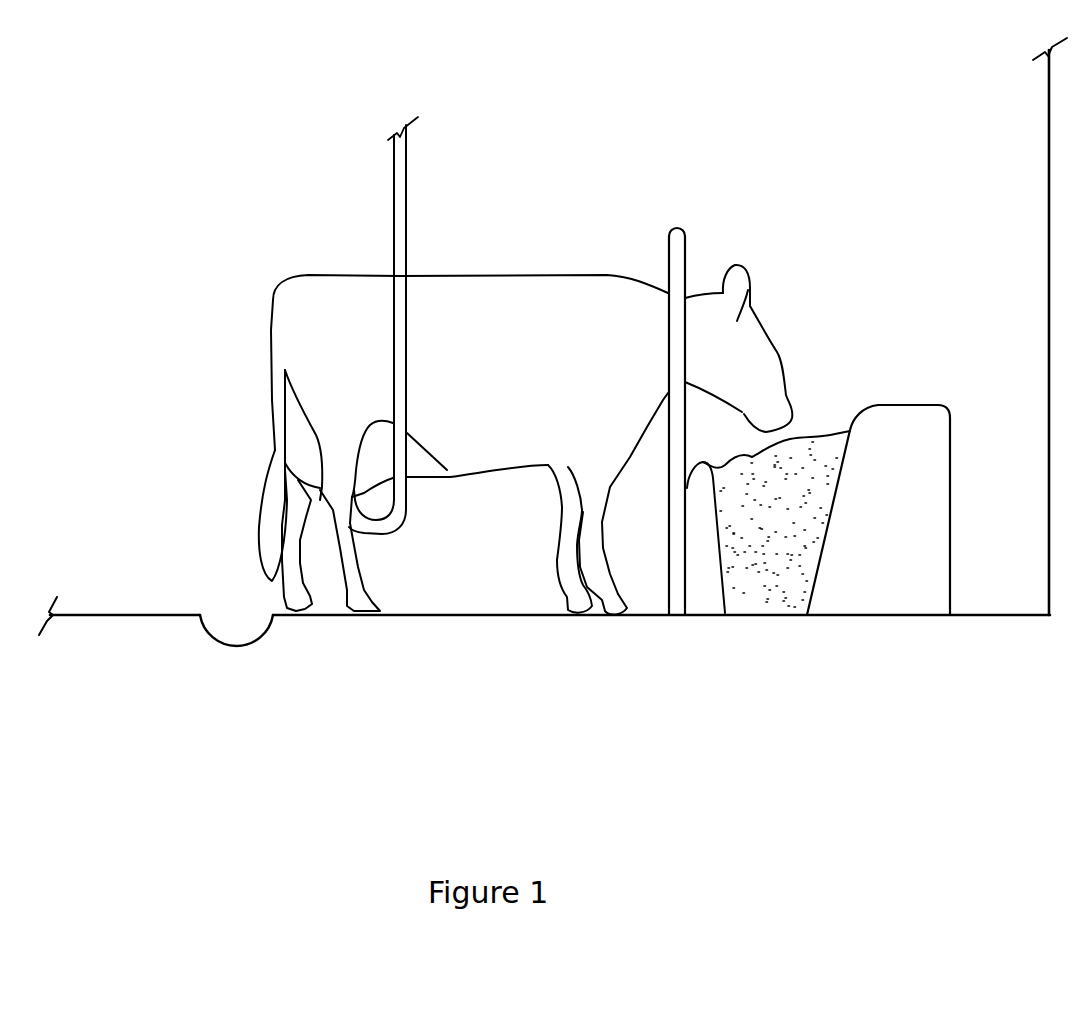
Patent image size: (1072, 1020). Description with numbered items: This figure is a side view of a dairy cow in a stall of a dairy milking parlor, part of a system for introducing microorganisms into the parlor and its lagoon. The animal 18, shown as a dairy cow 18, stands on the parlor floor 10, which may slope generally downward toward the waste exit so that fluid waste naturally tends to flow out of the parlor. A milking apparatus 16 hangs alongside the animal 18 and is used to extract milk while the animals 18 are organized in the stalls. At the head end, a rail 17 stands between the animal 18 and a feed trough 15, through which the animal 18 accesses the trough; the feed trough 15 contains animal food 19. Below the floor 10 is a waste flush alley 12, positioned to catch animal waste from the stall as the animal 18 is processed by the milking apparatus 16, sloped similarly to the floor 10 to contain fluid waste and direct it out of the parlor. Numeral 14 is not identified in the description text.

The parlor floor 10 is at (380, 702).
The waste flush alley 12 is at (203, 639).
The floor 14 is at (135, 613).
The feed trough 15 is at (910, 405).
The milking apparatus 16 is at (396, 264).
The rail 17 is at (682, 228).
The animal 18 is at (508, 274).
The animal food 19 is at (818, 440).